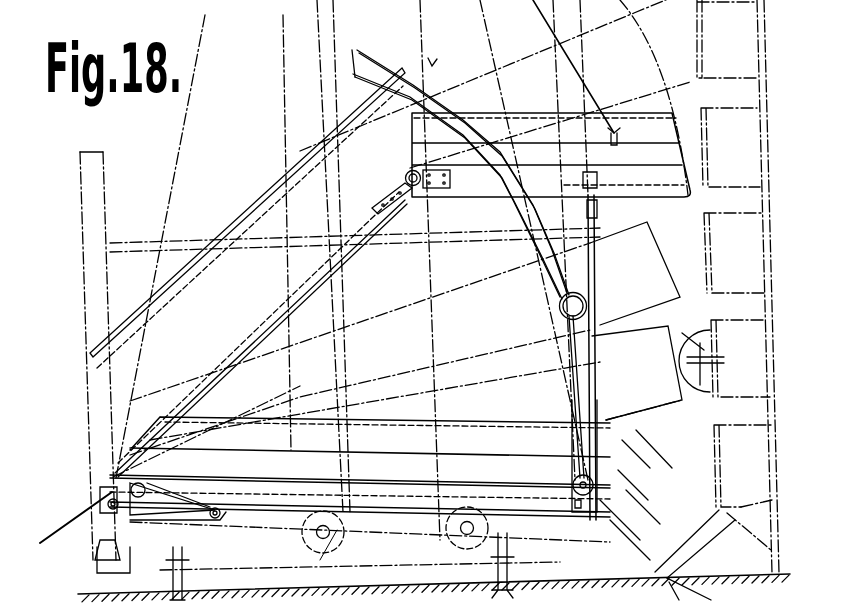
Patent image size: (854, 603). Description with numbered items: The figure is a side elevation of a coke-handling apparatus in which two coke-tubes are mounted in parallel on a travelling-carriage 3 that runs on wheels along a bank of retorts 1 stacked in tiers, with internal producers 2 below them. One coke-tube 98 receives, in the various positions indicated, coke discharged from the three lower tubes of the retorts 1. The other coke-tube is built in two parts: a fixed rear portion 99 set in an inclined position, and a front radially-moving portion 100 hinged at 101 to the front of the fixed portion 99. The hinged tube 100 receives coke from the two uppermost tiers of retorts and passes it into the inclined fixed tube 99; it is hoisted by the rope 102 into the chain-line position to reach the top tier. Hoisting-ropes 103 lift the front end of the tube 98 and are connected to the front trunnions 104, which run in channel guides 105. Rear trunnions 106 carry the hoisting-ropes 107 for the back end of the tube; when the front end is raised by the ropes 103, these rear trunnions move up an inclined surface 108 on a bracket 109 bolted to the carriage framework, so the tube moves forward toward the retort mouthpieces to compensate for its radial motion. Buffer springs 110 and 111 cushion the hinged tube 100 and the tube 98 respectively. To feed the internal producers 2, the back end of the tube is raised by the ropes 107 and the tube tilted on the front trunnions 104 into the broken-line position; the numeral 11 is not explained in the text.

The retorts 1 is at (729, 286).
The internal producers 2 is at (713, 550).
The travelling-carriage 3 is at (395, 533).
The ramp rail 11 is at (76, 508).
The coke-tube 98 is at (360, 493).
The fixed rear tube portion 99 is at (248, 263).
The front radially-moving tube portion 100 is at (551, 152).
The hinge 101 is at (408, 176).
The rope 102 is at (563, 72).
The hoisting-ropes 103 is at (496, 57).
The front trunnions 104 is at (572, 480).
The channel guides 105 is at (560, 297).
The rear trunnions 106 is at (110, 508).
The hoisting-ropes 107 is at (283, 135).
The inclined surface 108 is at (128, 515).
The bracket 109 is at (180, 513).
The buffer springs 110 is at (590, 210).
The buffer springs 111 is at (103, 548).